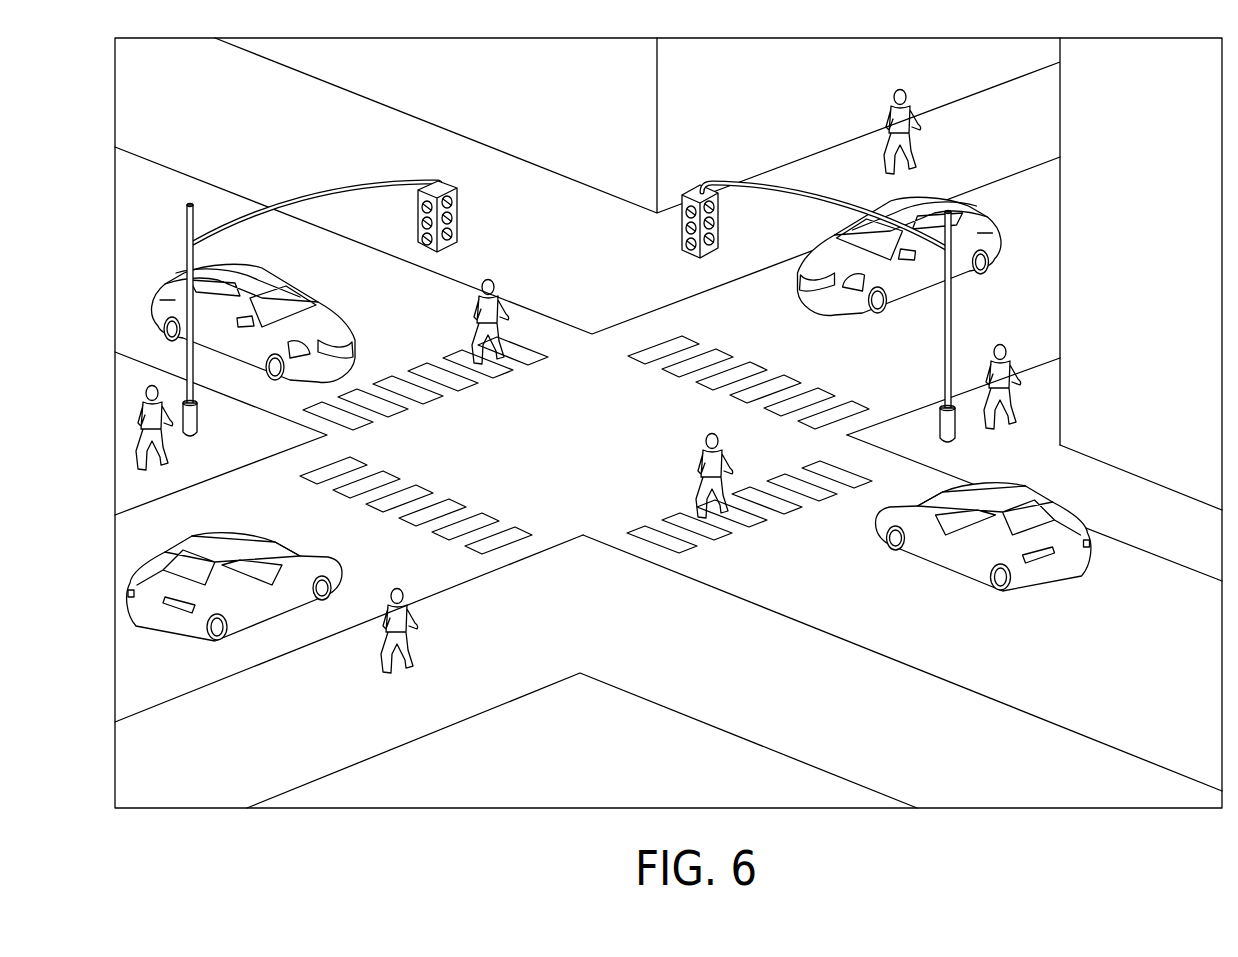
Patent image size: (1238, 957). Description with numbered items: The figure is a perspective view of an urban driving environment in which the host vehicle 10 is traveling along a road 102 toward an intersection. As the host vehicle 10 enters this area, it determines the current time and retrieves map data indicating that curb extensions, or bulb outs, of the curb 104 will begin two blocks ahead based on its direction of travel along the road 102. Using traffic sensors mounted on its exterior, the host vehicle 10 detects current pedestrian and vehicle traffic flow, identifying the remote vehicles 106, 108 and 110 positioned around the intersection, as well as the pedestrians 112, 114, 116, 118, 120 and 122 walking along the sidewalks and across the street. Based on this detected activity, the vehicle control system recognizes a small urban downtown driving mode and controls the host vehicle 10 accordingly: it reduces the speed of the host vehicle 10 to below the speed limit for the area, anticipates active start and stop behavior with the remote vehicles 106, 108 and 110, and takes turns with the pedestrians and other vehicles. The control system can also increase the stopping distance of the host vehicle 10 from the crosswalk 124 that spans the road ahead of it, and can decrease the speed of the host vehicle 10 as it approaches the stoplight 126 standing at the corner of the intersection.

The host vehicle 10 is at (948, 565).
The road 102 is at (1160, 610).
The curb 104 is at (1123, 546).
The remote vehicle 106 is at (215, 540).
The remote vehicle 108 is at (330, 311).
The remote vehicle 110 is at (925, 202).
The pedestrian 112 is at (690, 450).
The pedestrian 114 is at (415, 603).
The pedestrian 116 is at (140, 407).
The pedestrian 118 is at (500, 293).
The pedestrian 120 is at (887, 115).
The pedestrian 122 is at (1012, 348).
The crosswalk 124 is at (785, 510).
The stoplight 126 is at (940, 333).